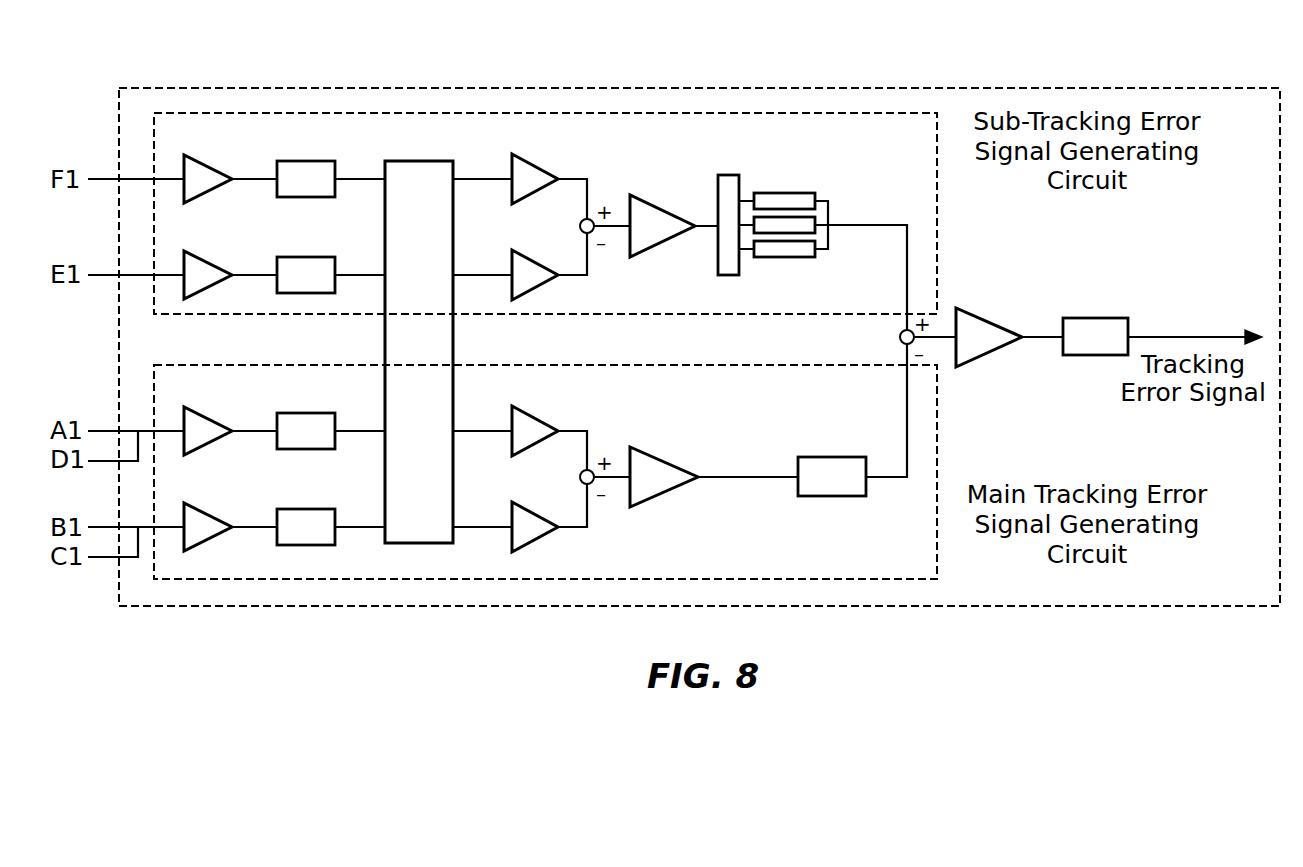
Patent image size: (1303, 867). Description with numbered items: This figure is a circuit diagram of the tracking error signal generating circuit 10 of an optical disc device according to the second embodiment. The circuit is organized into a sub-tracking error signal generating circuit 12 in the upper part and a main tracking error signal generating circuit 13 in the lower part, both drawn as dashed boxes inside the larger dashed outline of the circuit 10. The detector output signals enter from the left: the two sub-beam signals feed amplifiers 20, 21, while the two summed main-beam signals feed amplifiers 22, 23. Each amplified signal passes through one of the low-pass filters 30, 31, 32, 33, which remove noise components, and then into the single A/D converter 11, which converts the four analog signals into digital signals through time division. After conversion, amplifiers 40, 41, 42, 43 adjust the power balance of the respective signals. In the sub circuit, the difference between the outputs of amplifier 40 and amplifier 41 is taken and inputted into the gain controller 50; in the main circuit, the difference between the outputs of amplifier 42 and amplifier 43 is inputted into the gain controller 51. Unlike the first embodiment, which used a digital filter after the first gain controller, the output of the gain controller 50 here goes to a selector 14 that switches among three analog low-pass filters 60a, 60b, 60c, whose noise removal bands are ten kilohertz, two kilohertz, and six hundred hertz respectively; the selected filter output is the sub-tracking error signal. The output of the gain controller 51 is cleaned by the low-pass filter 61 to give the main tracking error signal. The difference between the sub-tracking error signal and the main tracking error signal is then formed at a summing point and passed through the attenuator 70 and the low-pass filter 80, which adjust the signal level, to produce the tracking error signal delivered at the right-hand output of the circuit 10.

The tracking error signal generating circuit 10 is at (830, 88).
The A/D converter 11 is at (418, 161).
The sub-tracking error signal generating circuit 12 is at (938, 255).
The main tracking error signal generating circuit 13 is at (938, 436).
The selector 14 is at (728, 175).
The amplifier 20 is at (207, 167).
The amplifier 21 is at (207, 263).
The amplifier 22 is at (207, 419).
The amplifier 23 is at (207, 515).
The low-pass filter 30 is at (305, 161).
The low-pass filter 31 is at (305, 257).
The low-pass filter 32 is at (305, 413).
The low-pass filter 33 is at (305, 509).
The amplifier 40 is at (535, 167).
The amplifier 41 is at (535, 288).
The amplifier 42 is at (535, 419).
The amplifier 43 is at (535, 540).
The gain controller (AGC) 50 is at (655, 207).
The gain controller (AGC) 51 is at (655, 459).
The low-pass filter 60a is at (783, 193).
The low-pass filter 60b is at (817, 231).
The low-pass filter 60c is at (783, 257).
The low-pass filter 61 is at (832, 457).
The attenuator 70 is at (980, 318).
The low-pass filter 80 is at (1095, 318).